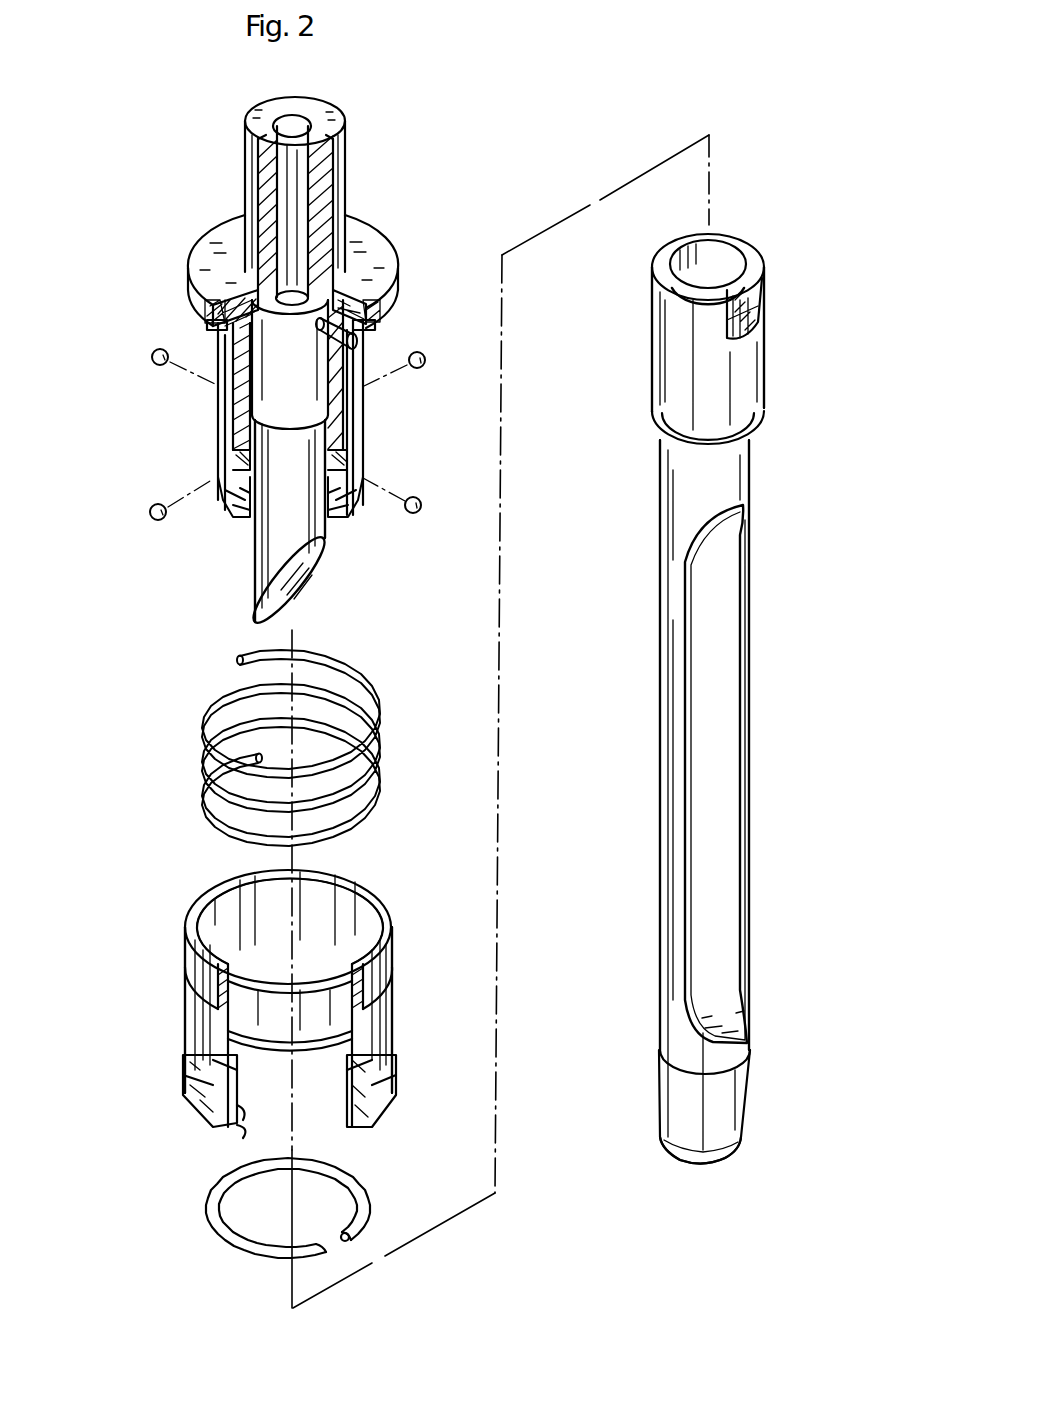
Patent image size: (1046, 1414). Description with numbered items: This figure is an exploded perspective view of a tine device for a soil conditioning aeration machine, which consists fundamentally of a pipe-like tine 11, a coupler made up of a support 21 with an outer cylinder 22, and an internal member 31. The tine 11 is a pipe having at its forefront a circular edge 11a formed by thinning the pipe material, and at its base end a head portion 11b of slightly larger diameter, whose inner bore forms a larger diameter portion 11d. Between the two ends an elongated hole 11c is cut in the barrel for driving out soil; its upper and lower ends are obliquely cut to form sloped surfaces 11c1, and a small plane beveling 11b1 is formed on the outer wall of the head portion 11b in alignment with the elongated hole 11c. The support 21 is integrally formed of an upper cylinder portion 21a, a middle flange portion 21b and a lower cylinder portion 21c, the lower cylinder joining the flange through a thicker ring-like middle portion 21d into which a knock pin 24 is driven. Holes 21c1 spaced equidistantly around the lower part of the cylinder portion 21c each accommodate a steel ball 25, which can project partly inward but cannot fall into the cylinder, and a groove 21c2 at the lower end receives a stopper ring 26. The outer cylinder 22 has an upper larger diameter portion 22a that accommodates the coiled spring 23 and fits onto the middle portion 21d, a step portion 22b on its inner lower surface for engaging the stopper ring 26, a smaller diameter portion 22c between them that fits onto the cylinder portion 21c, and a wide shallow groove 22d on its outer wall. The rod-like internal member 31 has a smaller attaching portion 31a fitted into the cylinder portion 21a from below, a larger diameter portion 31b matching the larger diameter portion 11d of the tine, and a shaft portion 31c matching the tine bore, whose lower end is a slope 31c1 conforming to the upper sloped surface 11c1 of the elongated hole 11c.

The pipe-like tine 11 is at (756, 1086).
The circular edge 11a is at (725, 1158).
The head portion 11b is at (745, 371).
The beveling 11b1 is at (752, 298).
The elongated hole 11c is at (718, 768).
The sloped surface 11c1 is at (745, 518).
The larger diameter portion 11d is at (725, 253).
The support 21 is at (383, 224).
The cylinder portion 21a is at (246, 183).
The flange portion 21b is at (199, 249).
The cylinder portion 21c is at (218, 412).
The hole 21c1 is at (233, 455).
The groove 21c2 is at (355, 505).
The middle portion 21d is at (216, 324).
The outer cylinder 22 is at (395, 1009).
The larger diameter portion 22a is at (228, 960).
The step portion 22b is at (230, 1126).
The smaller diameter portion 22c is at (240, 1071).
The groove 22d is at (194, 1016).
The coiled spring 23 is at (377, 741).
The knock pin 24 is at (322, 336).
The steel ball 25 is at (152, 357).
The stopper ring 26 is at (215, 1213).
The internal member 31 is at (250, 594).
The attaching portion 31a is at (297, 190).
The larger diameter portion 31b is at (290, 418).
The shaft portion 31c is at (273, 545).
The slope 31c1 is at (310, 567).